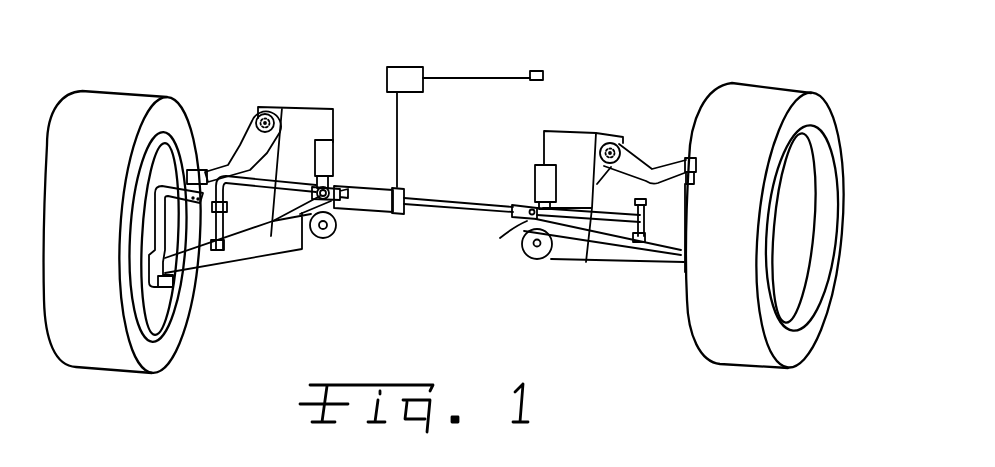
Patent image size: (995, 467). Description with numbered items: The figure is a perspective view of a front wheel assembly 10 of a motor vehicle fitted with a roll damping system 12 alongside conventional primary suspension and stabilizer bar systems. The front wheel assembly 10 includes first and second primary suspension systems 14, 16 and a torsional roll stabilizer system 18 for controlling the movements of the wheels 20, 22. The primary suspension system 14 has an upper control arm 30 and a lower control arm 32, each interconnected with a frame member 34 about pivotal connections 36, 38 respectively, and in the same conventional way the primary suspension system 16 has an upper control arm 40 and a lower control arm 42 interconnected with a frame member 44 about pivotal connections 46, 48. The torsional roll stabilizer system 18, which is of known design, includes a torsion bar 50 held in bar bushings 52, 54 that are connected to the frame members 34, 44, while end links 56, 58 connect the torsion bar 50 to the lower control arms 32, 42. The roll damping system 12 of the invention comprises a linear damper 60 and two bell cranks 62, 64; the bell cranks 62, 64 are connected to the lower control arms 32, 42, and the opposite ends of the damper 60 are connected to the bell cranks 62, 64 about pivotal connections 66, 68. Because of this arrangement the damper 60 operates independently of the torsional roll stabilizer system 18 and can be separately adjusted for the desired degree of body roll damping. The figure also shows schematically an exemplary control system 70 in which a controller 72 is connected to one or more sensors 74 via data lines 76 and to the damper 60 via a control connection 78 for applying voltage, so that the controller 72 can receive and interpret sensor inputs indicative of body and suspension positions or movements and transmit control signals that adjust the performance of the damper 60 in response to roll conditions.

The front wheel assembly 10 is at (200, 66).
The roll damping system 12 is at (408, 262).
The first primary suspension system 14 is at (244, 99).
The second primary suspension system 16 is at (660, 101).
The torsional roll stabilizer system 18 is at (237, 199).
The wheel 20 is at (163, 356).
The wheel 22 is at (727, 348).
The upper control arm 30 is at (230, 157).
The lower control arm 32 is at (264, 248).
The frame member 34 is at (306, 115).
The pivotal connection 36 is at (264, 113).
The pivotal connection 38 is at (325, 229).
The upper control arm 40 is at (657, 160).
The lower control arm 42 is at (668, 258).
The frame member 44 is at (574, 133).
The pivotal connection 46 is at (611, 143).
The pivotal connection 48 is at (537, 246).
The torsion bar 50 is at (586, 264).
The bar bushing 52 is at (324, 169).
The bar bushing 54 is at (548, 201).
The end link 56 is at (222, 250).
The end link 58 is at (652, 256).
The linear damper 60 is at (378, 208).
The bell crank 62 is at (300, 208).
The bell crank 64 is at (503, 237).
The pivotal connection 66 is at (332, 193).
The pivotal connection 68 is at (522, 221).
The control system 70 is at (445, 59).
The controller 72 is at (412, 68).
The sensor 74 is at (542, 68).
The data lines 76 is at (480, 77).
The control connection 78 is at (398, 131).